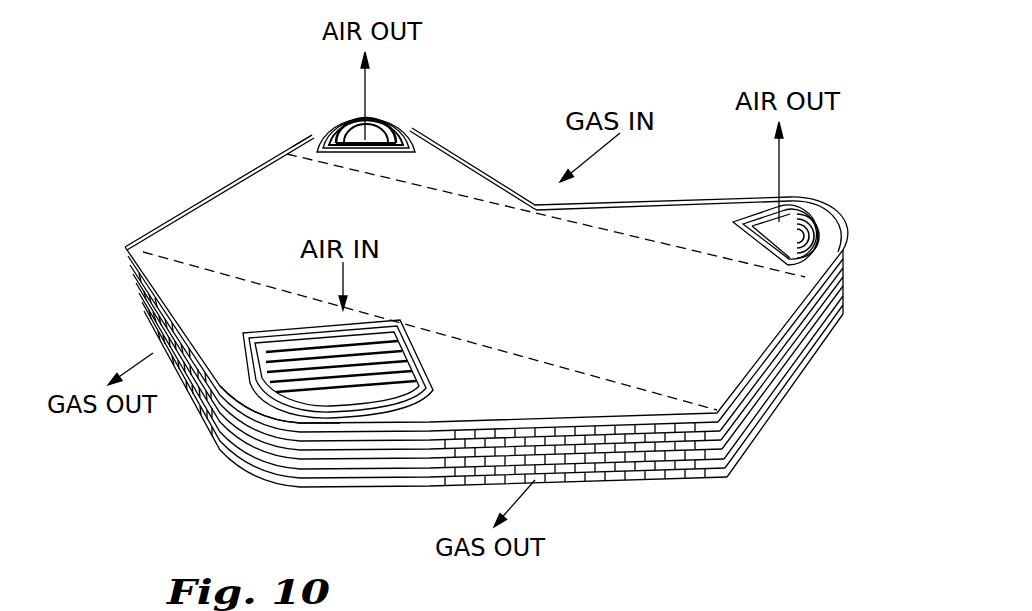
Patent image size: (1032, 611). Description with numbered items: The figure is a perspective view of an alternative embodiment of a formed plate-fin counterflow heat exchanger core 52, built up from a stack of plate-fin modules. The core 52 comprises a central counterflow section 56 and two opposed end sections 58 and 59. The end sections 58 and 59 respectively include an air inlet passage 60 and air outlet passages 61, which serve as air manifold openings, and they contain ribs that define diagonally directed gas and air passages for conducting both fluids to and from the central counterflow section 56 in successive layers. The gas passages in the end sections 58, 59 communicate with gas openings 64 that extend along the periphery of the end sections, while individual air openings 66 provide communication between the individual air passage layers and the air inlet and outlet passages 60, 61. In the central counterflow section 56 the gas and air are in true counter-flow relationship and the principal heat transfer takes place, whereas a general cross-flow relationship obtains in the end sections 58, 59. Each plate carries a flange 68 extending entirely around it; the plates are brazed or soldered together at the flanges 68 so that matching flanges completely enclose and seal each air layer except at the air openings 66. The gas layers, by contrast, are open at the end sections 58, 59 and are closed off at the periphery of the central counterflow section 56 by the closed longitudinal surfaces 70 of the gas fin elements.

The formed plate-fin counterflow heat exchanger core 52 is at (722, 58).
The central counterflow section 56 is at (218, 168).
The end section 58 is at (158, 266).
The end section 59 is at (301, 139).
The air inlet passage 60 is at (333, 402).
The air outlet passage 61 is at (395, 128).
The gas opening 64 is at (197, 413).
The air opening 66 is at (362, 340).
The flange 68 is at (200, 203).
The closed longitudinal surface 70 is at (793, 343).